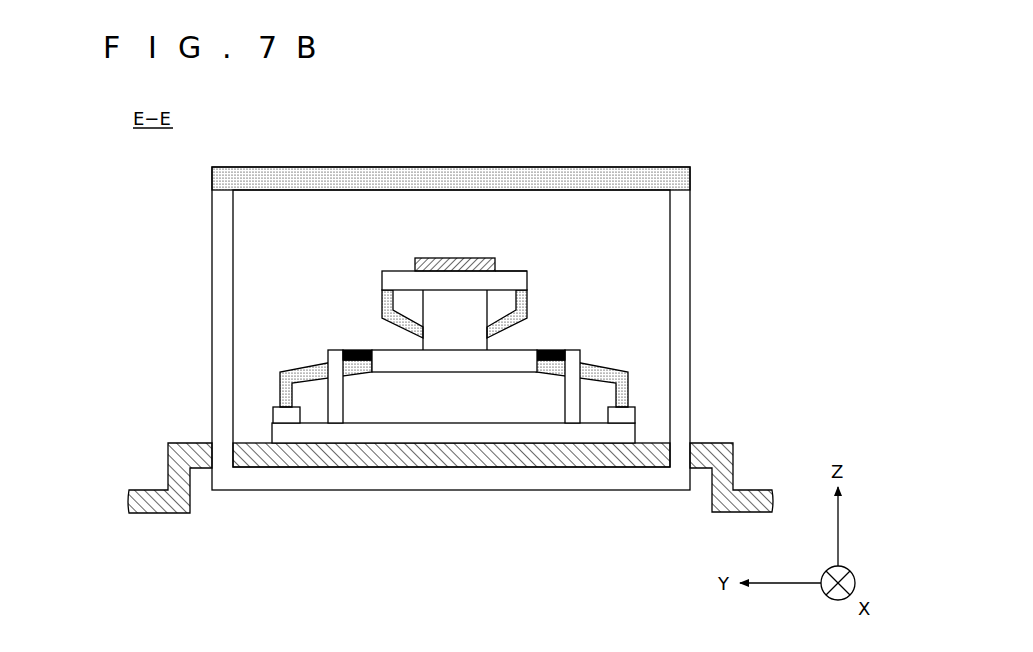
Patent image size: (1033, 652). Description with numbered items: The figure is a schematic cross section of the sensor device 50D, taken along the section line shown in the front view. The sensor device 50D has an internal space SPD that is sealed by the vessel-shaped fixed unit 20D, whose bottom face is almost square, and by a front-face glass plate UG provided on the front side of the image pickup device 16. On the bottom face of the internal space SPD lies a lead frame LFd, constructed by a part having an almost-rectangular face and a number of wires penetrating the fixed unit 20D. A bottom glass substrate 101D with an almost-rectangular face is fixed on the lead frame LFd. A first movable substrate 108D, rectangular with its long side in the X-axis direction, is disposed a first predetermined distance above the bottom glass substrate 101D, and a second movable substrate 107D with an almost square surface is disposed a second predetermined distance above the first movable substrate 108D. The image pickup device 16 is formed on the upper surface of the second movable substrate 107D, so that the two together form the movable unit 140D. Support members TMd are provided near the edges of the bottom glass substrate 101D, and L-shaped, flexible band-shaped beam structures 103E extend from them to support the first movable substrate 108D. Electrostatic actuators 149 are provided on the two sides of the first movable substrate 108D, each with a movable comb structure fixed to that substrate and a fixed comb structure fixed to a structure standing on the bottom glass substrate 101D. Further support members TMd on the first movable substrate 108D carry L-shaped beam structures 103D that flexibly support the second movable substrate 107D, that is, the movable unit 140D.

The sensor device 50D is at (637, 150).
The front-face glass plate UG is at (465, 167).
The internal space SPD is at (258, 243).
The fixed unit 20D is at (470, 488).
The lead frame LFd is at (750, 490).
The bottom glass substrate 101D is at (311, 443).
The support member TMd is at (272, 413).
The beam structure 103E is at (294, 372).
The electrostatic actuator 149 is at (352, 343).
The first movable substrate 108D is at (383, 372).
The beam structure 103D is at (381, 304).
The movable unit 140D is at (534, 265).
The second movable substrate 107D is at (515, 271).
The image pickup device 16 is at (460, 258).